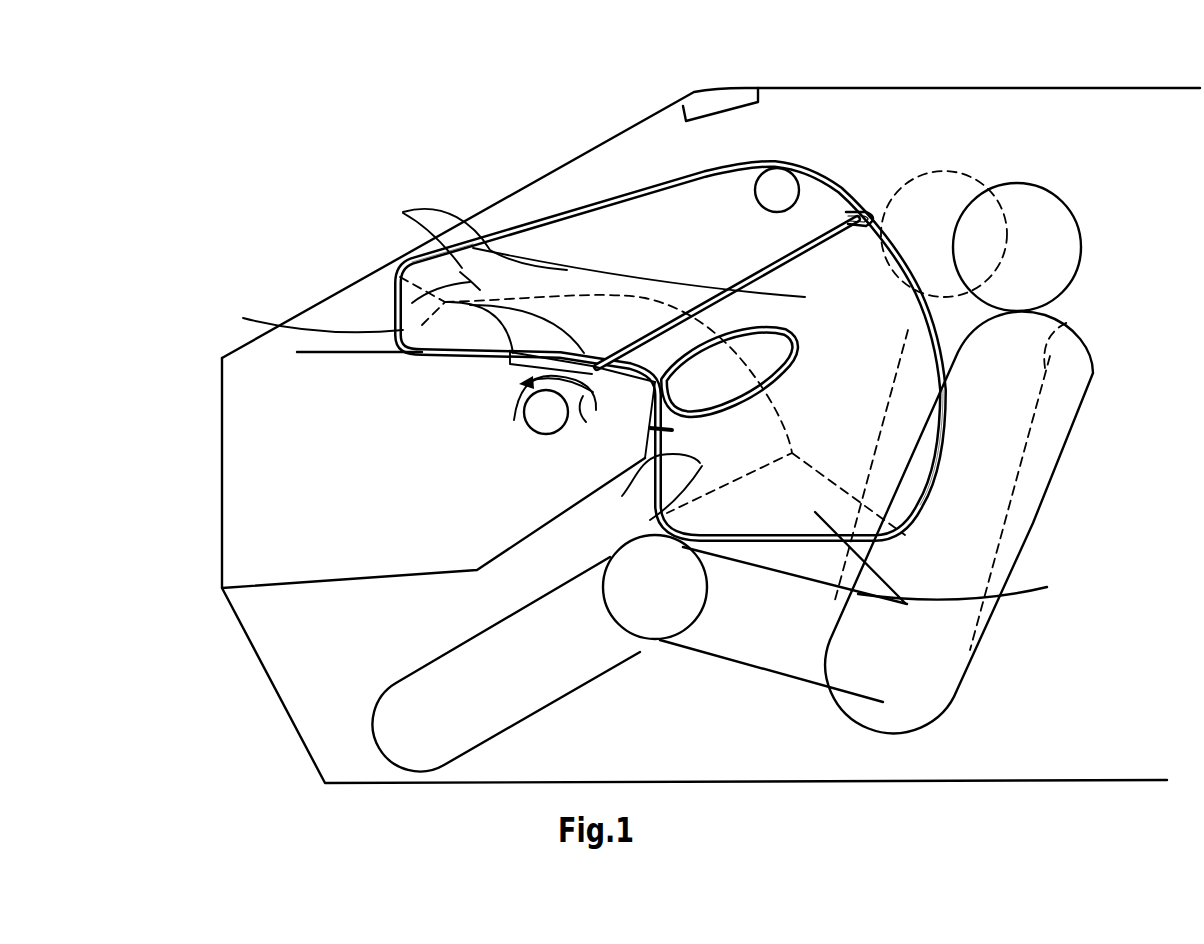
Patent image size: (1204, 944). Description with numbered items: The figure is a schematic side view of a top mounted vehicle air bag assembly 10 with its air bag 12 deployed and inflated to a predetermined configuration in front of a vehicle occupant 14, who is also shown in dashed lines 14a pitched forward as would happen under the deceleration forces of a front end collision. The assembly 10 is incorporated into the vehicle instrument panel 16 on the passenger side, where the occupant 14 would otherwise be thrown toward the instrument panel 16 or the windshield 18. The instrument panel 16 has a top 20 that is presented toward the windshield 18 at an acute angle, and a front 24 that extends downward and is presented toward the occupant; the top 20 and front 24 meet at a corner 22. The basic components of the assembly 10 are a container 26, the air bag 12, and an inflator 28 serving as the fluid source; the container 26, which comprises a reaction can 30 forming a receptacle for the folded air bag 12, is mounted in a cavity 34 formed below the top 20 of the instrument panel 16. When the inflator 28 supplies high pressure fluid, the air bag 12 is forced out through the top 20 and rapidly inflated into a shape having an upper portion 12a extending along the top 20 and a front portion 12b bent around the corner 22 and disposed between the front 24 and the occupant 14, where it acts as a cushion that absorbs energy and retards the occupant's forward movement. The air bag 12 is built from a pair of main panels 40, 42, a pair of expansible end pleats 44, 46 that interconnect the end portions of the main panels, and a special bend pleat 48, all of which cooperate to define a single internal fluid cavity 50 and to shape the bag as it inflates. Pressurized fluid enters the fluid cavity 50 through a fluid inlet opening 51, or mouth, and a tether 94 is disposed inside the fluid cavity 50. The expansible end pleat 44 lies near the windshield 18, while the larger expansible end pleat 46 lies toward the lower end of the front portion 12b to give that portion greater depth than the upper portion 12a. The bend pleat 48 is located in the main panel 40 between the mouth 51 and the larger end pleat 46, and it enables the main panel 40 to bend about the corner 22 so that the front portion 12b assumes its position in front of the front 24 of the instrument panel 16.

The air bag assembly 10 is at (772, 163).
The air bag 12 is at (820, 170).
The upper portion of the air bag 12a is at (499, 233).
The front portion of the air bag 12b is at (945, 417).
The vehicle occupant 14 is at (1083, 343).
The pitched-forward position of the occupant 14a is at (1068, 322).
The vehicle instrument panel 16 is at (308, 394).
The windshield 18 is at (460, 272).
The top of the instrument panel 20 is at (305, 351).
The corner of the instrument panel 22 is at (652, 385).
The front of the instrument panel 24 is at (660, 428).
The container 26 is at (582, 385).
The inflator 28 is at (518, 420).
The reaction can 30 is at (585, 422).
The cavity 34 is at (508, 409).
The main panel 40 is at (245, 318).
The main panel 42 is at (403, 212).
The expansible end pleat 44 is at (412, 303).
The expansible end pleat 46 is at (871, 607).
The bend pleat 48 is at (796, 343).
The fluid cavity 50 is at (792, 180).
The fluid inlet opening 51 is at (450, 302).
The tether 94 is at (828, 210).